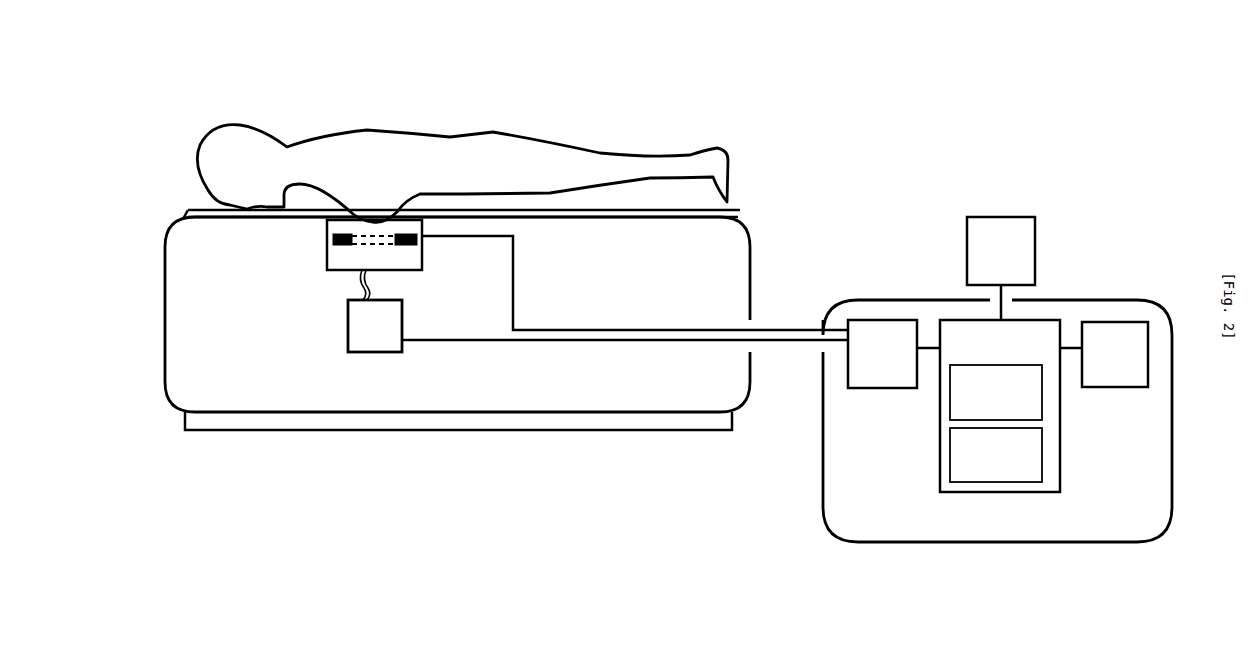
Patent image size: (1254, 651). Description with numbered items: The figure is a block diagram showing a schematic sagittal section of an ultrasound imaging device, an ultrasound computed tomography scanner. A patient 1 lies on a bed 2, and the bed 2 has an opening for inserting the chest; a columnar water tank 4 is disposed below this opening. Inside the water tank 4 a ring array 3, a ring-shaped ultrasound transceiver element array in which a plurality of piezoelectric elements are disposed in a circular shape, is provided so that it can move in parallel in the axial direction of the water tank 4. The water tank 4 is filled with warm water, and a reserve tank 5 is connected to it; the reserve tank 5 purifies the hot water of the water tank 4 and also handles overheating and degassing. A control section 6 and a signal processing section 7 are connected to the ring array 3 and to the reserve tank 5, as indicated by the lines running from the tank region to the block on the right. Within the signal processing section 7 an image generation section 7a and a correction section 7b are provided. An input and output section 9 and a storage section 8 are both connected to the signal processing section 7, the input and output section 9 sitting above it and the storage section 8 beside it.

The patient 1 is at (412, 130).
The bed 2 is at (740, 214).
The ring array 3 is at (332, 235).
The water tank 4 is at (350, 262).
The reserve tank 5 is at (348, 320).
The control section 6 is at (872, 388).
The signal processing section 7 is at (955, 492).
The image generation section 7a is at (1042, 400).
The correction section 7b is at (1042, 452).
The storage section 8 is at (1122, 388).
The input and output section 9 is at (1035, 250).